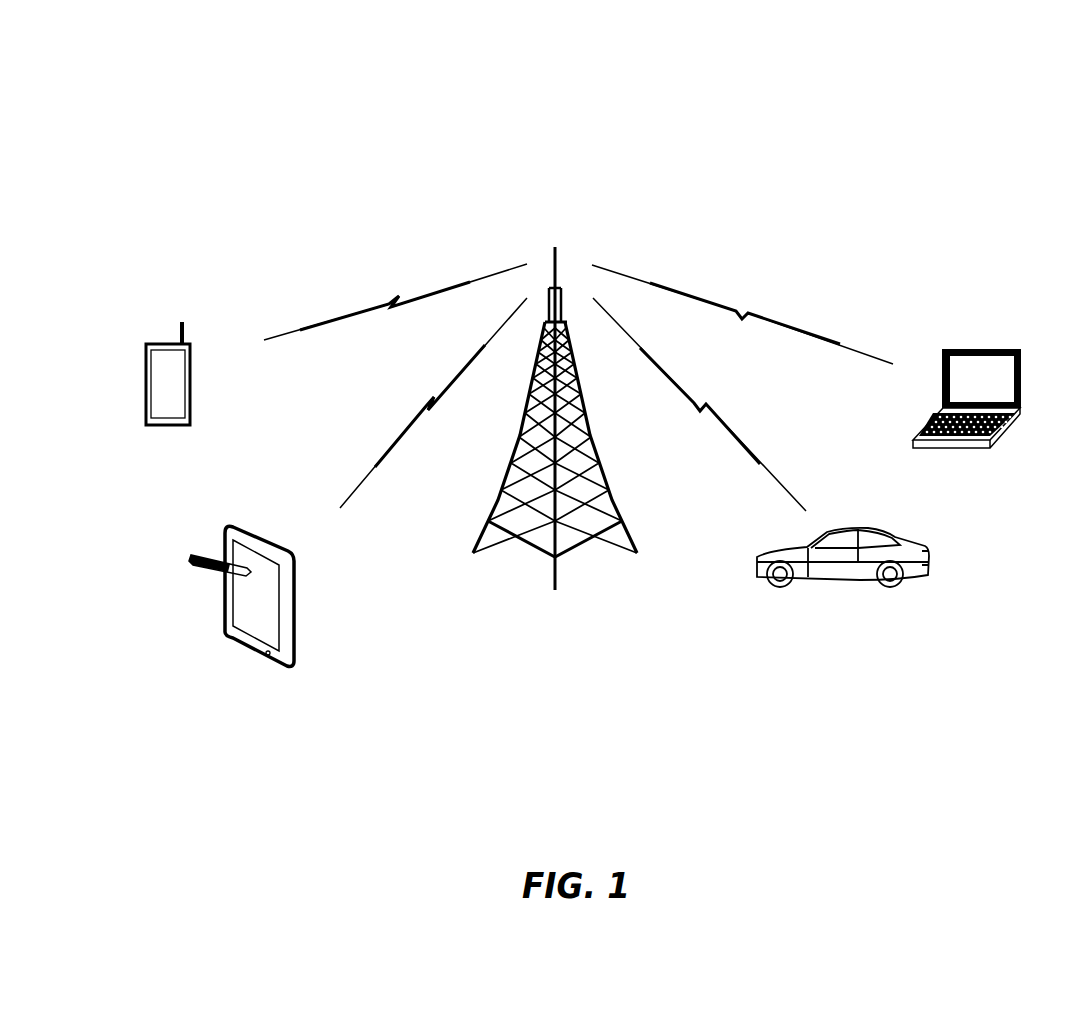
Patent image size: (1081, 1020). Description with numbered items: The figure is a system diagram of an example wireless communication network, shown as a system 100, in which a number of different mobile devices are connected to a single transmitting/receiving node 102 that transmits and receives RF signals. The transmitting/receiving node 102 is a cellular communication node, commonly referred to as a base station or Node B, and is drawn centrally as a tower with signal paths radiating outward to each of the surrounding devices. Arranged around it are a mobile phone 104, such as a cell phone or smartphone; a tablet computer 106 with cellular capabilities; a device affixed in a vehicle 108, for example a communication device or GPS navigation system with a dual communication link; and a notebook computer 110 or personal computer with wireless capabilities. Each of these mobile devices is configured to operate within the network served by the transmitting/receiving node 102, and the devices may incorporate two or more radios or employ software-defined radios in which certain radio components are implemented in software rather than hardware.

The system 100 is at (945, 98).
The transmitting/receiving node 102 is at (557, 266).
The mobile phone 104 is at (146, 356).
The tablet computer 106 is at (225, 530).
The device affixed in a vehicle 108 is at (928, 570).
The notebook computer 110 is at (1013, 418).